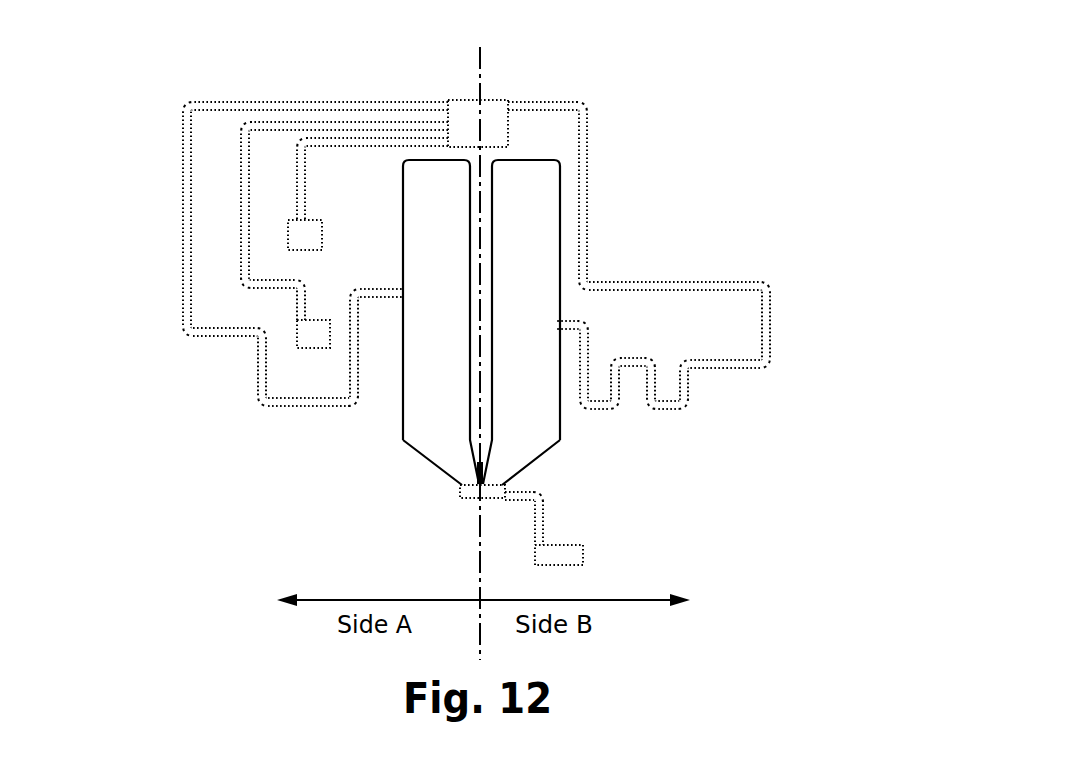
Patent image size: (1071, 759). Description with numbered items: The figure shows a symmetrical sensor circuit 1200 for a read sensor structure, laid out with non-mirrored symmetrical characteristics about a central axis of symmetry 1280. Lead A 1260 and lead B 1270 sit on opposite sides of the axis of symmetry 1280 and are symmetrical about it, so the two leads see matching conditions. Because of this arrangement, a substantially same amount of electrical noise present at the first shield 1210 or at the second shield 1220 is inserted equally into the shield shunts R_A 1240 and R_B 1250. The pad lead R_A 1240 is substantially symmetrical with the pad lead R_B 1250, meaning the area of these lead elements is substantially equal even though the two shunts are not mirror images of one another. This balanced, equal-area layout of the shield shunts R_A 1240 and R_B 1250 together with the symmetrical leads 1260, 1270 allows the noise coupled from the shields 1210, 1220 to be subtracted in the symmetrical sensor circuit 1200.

The symmetrical sensor circuit 1200 is at (422, 227).
The shield 1 1210 is at (312, 220).
The shield 2 1220 is at (307, 318).
The shield shunt R_A 1240 is at (157, 242).
The shield shunt R_B 1250 is at (640, 212).
The lead A 1260 is at (462, 372).
The lead B 1270 is at (555, 372).
The axis of symmetry 1280 is at (481, 59).